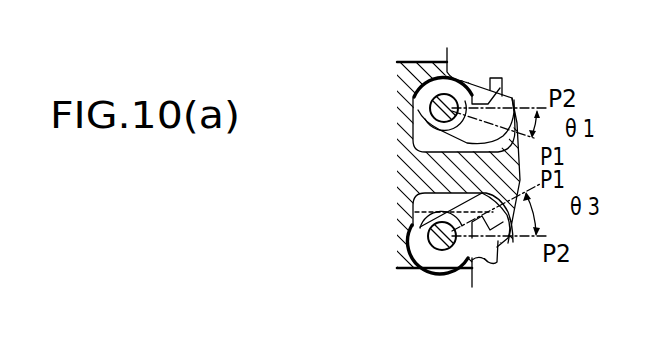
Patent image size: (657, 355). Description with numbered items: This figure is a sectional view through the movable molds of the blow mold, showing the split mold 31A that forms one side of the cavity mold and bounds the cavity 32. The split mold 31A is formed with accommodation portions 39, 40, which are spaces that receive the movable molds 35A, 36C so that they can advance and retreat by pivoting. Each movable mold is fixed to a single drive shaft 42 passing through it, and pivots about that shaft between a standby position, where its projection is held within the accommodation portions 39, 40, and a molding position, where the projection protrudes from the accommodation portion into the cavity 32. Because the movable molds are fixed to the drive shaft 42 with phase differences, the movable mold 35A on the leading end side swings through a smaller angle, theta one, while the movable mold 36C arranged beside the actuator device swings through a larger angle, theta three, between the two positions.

The split mold 31A is at (408, 72).
The cavity 32 is at (512, 64).
The movable mold 35A is at (414, 96).
The movable mold 36C is at (414, 238).
The accommodation portion 39 is at (414, 138).
The accommodation portion 40 is at (413, 198).
The drive shaft 42 is at (442, 96).